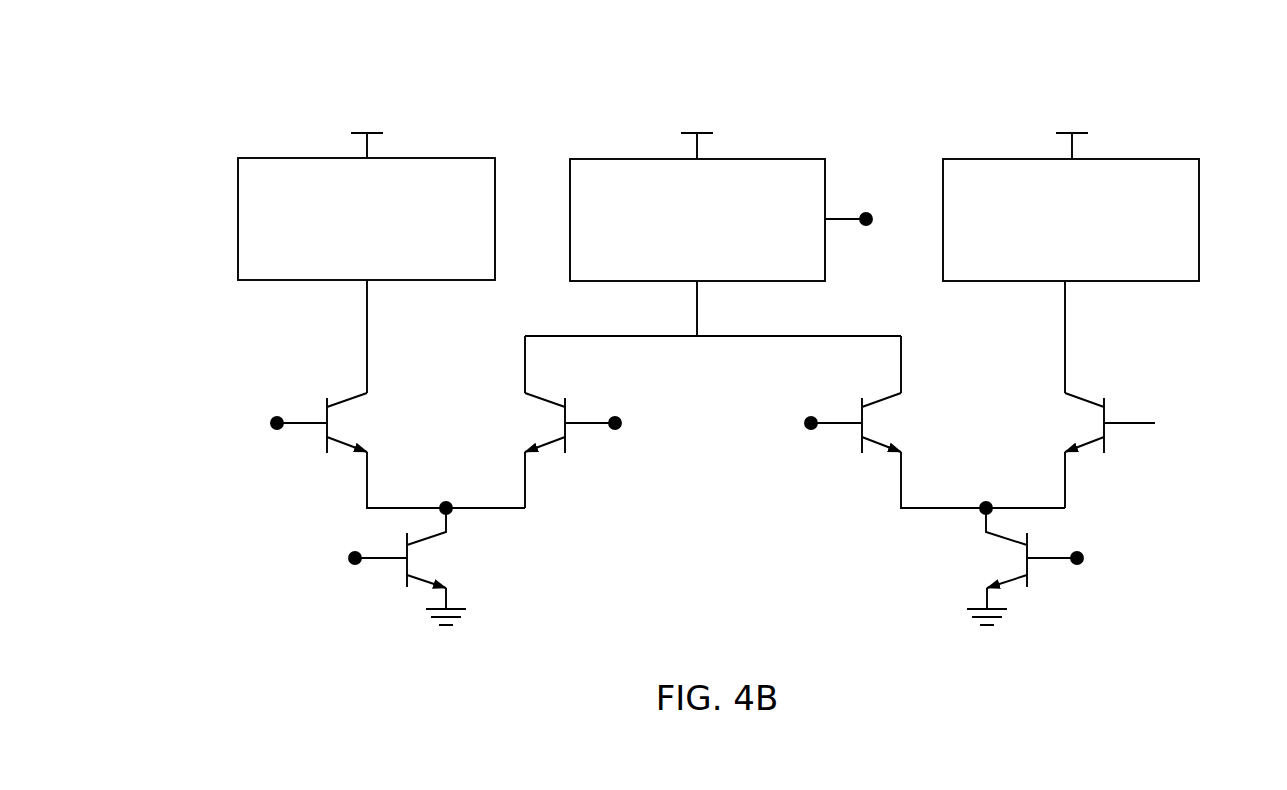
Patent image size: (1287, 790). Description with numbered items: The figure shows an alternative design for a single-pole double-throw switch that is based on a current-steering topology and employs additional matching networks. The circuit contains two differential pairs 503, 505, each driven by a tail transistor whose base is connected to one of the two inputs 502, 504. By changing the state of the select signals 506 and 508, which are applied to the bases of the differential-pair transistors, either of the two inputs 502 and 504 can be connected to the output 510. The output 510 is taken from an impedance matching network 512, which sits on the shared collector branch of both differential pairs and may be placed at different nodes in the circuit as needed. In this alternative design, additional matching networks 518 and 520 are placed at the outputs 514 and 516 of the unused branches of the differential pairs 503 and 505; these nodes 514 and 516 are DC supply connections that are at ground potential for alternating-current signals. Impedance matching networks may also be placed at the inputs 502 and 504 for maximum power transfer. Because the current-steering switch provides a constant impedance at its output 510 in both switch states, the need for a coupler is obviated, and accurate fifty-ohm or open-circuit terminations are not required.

The input 502 is at (339, 559).
The differential pair 503 is at (549, 420).
The input 504 is at (1093, 558).
The differential pair 505 is at (1086, 420).
The select signal 506 is at (637, 422).
The select signal 508 is at (259, 423).
The output 510 is at (881, 210).
The impedance matching network 512 is at (697, 207).
The output of unused branch 514 is at (358, 106).
The output of unused branch 516 is at (1081, 122).
The matching network 518 is at (366, 275).
The matching network 520 is at (1071, 276).